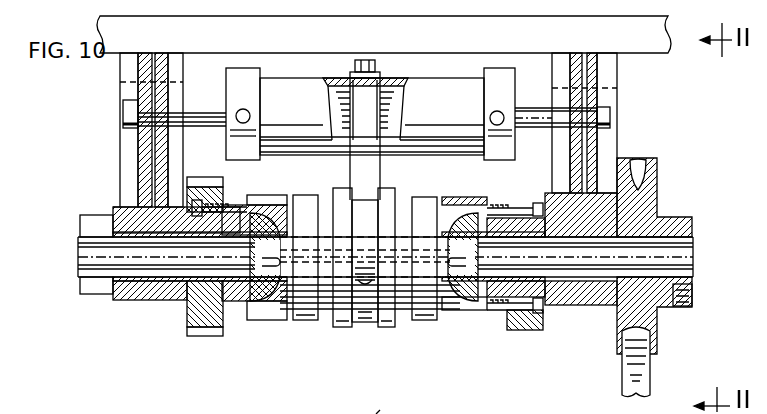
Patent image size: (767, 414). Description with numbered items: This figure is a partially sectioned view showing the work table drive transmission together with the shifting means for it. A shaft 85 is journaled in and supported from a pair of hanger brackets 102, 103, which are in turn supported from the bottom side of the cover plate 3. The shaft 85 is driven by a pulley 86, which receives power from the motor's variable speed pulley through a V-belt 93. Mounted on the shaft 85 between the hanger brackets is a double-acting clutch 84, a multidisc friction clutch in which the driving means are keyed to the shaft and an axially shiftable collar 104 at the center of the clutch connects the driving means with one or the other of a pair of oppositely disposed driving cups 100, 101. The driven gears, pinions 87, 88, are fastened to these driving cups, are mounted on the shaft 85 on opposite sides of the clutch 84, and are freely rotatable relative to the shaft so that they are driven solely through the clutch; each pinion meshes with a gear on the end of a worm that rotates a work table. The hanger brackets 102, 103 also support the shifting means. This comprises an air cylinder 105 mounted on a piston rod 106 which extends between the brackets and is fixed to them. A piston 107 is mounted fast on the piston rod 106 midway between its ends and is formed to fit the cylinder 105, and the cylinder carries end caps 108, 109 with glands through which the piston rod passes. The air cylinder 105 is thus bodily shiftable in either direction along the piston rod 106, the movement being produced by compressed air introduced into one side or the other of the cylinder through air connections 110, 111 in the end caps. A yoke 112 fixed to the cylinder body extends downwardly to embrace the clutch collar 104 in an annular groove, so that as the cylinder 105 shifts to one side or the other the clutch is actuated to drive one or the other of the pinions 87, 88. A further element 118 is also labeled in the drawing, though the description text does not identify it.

The cover plate 3 is at (643, 48).
The double-acting clutch 84 is at (343, 336).
The shaft 85 is at (690, 257).
The pulley 86 is at (658, 187).
The pinion 87 is at (187, 312).
The pinion 88 is at (543, 318).
The V-belt 93 is at (653, 371).
The driving cup 100 is at (255, 322).
The driving cup 101 is at (462, 321).
The hanger bracket 102 is at (123, 160).
The hanger bracket 103 is at (622, 141).
The shiftable collar 104 is at (368, 318).
The air cylinder 105 is at (423, 87).
The piston rod 106 is at (523, 110).
The piston 107 is at (392, 84).
The end cap 108 is at (244, 75).
The end cap 109 is at (497, 77).
The air connection 110 is at (252, 113).
The air connection 111 is at (490, 115).
The yoke 112 is at (375, 173).
The lower element 118 is at (380, 412).